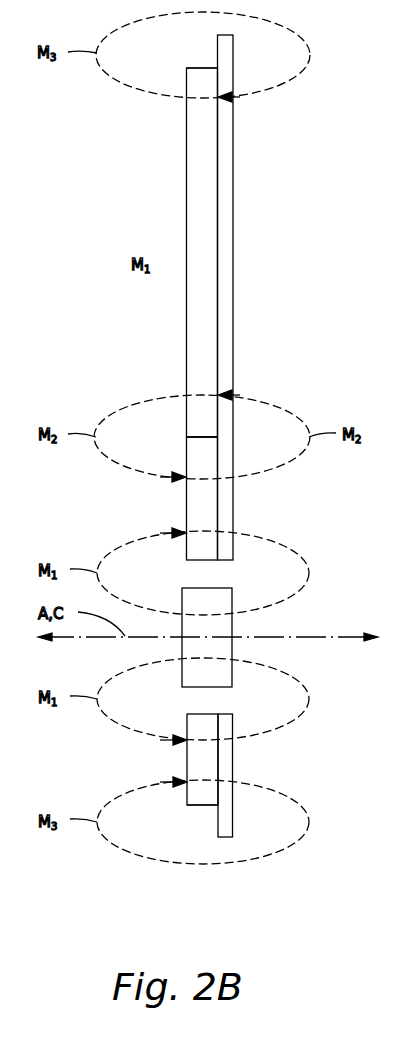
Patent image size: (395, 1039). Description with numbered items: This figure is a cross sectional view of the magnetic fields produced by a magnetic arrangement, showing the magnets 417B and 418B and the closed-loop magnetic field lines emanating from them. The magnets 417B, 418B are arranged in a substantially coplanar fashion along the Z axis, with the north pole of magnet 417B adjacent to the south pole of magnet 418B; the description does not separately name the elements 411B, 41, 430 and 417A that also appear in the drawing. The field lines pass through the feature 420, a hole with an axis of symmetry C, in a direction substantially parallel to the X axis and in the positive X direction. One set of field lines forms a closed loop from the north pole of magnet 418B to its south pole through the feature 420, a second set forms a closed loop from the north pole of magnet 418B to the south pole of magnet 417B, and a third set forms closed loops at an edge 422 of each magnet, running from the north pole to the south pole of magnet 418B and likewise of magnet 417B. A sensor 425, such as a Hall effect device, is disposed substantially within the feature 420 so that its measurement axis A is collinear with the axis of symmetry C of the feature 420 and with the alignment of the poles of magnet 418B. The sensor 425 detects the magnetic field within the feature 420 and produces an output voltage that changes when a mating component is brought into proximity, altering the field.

The upper imaging module assembly 411B is at (229, 297).
The imaging apparatus (truncated label) 41 is at (383, 134).
The magnet 417B is at (195, 146).
The magnet 418B is at (195, 503).
The narrow elongate member 430 is at (233, 220).
The edge 422 is at (195, 66).
The sensor 425 is at (215, 595).
The feature 420 is at (150, 651).
The lower bar segment 417A is at (195, 762).